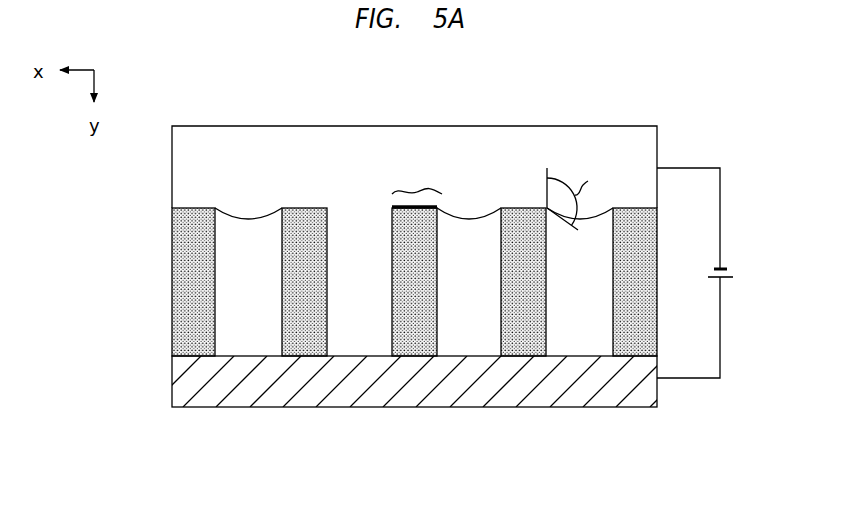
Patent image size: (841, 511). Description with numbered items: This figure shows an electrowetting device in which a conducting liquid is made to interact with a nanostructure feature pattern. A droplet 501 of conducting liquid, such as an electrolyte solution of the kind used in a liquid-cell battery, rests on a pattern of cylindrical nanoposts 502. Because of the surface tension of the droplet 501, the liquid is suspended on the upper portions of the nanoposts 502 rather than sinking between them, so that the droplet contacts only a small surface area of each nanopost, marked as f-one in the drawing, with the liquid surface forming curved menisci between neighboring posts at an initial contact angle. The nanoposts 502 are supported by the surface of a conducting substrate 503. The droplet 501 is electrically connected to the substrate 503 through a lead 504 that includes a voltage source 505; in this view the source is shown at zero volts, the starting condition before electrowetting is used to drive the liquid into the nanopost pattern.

The droplet 501 is at (658, 132).
The cylindrical nanoposts 502 is at (213, 295).
The conducting substrate 503 is at (173, 398).
The lead 504 is at (722, 347).
The voltage source 505 is at (732, 270).